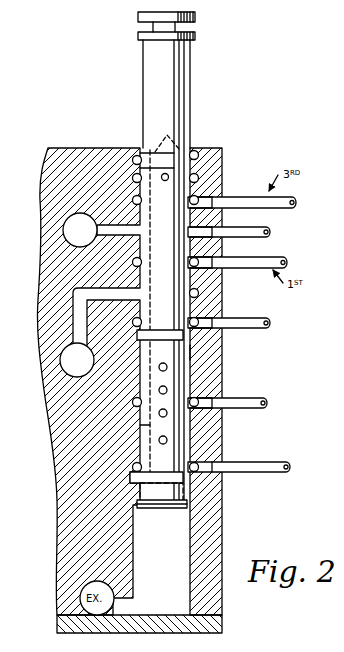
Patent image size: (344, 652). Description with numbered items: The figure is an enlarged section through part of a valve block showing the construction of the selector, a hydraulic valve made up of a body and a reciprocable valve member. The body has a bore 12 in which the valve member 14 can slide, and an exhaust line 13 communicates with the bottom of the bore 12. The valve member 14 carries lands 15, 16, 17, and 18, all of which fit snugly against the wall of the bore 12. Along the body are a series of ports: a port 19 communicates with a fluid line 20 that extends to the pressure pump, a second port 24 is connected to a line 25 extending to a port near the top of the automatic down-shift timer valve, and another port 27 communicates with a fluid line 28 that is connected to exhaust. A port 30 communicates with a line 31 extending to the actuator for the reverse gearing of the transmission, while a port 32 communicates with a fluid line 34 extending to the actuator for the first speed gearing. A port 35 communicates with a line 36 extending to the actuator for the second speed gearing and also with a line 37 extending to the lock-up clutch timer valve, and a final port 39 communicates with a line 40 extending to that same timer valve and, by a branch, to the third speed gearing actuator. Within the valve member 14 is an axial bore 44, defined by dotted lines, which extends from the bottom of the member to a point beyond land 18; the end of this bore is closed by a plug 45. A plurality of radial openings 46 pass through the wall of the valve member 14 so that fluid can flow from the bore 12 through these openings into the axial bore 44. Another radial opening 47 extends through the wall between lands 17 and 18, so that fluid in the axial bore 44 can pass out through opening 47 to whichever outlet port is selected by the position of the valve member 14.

The bore 12 is at (177, 602).
The exhaust line 13 is at (120, 612).
The valve member 14 is at (180, 85).
The land 15 is at (138, 478).
The land 16 is at (205, 350).
The land 17 is at (136, 187).
The land 18 is at (140, 165).
The port 19 is at (197, 470).
The fluid line 20 is at (277, 467).
The second port 24 is at (198, 407).
The line 25 is at (248, 402).
The port 27 is at (207, 335).
The fluid line 28 is at (270, 318).
The port 30 is at (215, 287).
The line 31 is at (80, 330).
The port 32 is at (212, 272).
The fluid line 34 is at (257, 258).
The port 35 is at (197, 238).
The line 36 is at (122, 232).
The line 37 is at (247, 228).
The final port 39 is at (200, 198).
The line 40 is at (252, 197).
The axial bore 44 is at (135, 428).
The plug 45 is at (155, 508).
The radial openings 46 is at (167, 390).
The radial opening 47 is at (165, 181).